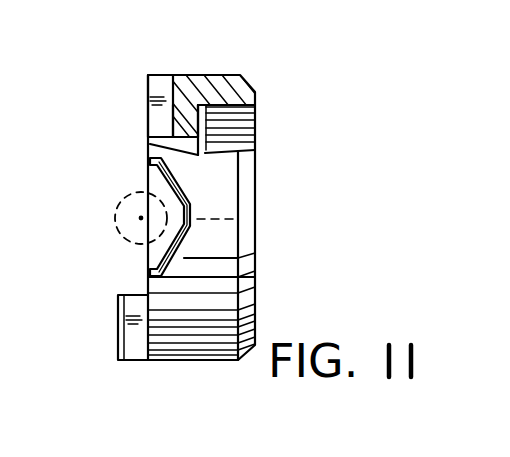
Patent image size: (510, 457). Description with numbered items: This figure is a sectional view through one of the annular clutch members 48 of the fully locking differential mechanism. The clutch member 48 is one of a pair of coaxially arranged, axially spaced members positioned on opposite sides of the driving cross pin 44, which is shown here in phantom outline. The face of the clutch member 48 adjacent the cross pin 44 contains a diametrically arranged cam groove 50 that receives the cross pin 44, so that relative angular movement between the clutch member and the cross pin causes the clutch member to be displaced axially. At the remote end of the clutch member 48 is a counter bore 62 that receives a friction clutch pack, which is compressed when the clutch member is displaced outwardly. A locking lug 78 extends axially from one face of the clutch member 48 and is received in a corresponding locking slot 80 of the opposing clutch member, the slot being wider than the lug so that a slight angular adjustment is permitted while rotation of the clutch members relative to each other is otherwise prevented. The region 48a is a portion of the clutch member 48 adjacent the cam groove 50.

The clutch member 48 is at (199, 74).
The channel in connector block 48a is at (243, 122).
The locking slot 80 is at (153, 86).
The counter bore 62 is at (194, 116).
The cam groove 50 is at (160, 172).
The cross pin 44 is at (122, 252).
The locking lug 78 is at (137, 334).